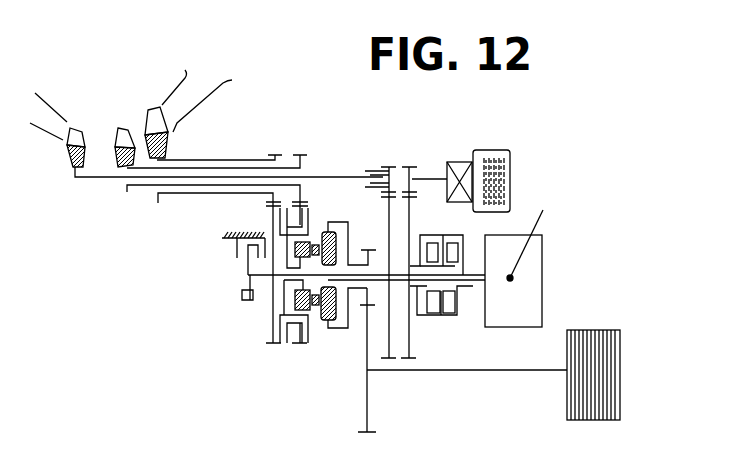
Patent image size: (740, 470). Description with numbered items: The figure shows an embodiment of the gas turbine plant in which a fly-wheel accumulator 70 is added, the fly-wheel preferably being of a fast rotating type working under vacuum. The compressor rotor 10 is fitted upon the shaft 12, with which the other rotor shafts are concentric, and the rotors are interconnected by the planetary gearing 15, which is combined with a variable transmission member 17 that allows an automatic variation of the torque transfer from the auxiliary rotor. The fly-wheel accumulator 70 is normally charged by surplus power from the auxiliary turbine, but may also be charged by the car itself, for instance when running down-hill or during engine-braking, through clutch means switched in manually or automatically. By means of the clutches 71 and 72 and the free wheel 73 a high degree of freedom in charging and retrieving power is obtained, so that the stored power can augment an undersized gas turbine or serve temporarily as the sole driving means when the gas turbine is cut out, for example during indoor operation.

The compressor rotor 10 is at (75, 128).
The shaft 12 is at (100, 177).
The planetary gearing 15 is at (268, 308).
The variable transmission member 17 is at (533, 295).
The fly-wheel accumulator 70 is at (507, 180).
The clutch 71 is at (432, 322).
The clutch 72 is at (450, 310).
The free wheel 73 is at (387, 167).